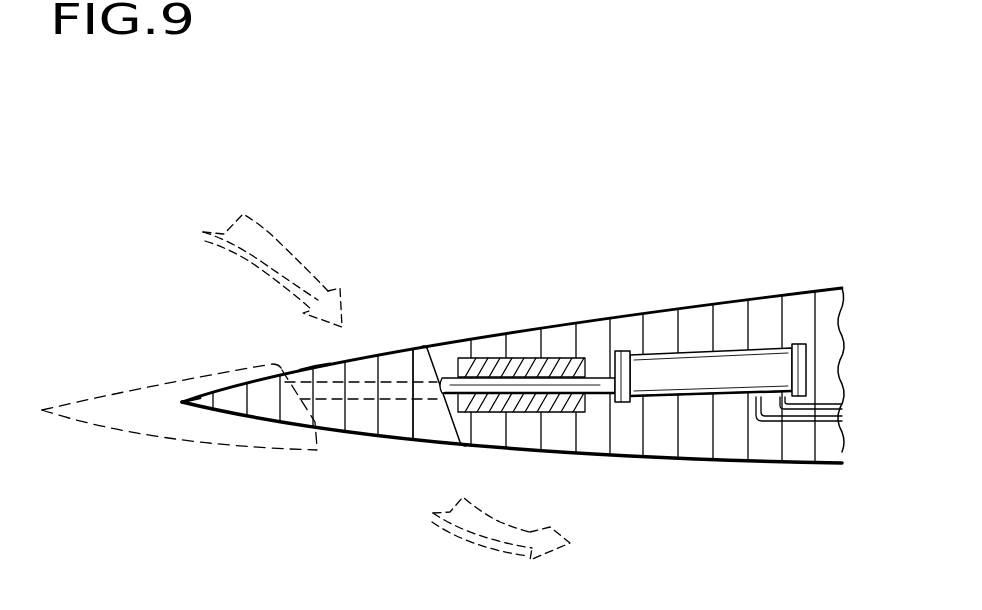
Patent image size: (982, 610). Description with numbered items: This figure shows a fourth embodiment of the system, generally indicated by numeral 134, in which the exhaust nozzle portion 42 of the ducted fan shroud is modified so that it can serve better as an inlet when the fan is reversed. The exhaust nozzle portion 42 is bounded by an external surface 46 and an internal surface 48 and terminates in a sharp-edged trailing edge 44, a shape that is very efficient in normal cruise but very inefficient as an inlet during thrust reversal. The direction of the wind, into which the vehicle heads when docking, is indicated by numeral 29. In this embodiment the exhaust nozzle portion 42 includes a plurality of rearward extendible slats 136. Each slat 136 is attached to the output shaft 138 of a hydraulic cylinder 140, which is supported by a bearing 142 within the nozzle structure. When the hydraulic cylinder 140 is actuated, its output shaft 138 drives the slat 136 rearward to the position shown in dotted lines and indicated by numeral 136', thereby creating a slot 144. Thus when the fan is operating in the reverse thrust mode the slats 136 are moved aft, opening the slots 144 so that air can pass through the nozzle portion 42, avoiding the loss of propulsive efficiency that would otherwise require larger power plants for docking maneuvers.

The wind direction 29 is at (287, 252).
The exhaust nozzle portion 42 is at (808, 287).
The trailing edge 44 is at (182, 400).
The external surface 46 is at (757, 298).
The internal surface 48 is at (670, 459).
The fourth embodiment of the system 134 is at (432, 240).
The rearward extendible slat 136 is at (375, 363).
The slat in rearward position 136' is at (179, 448).
The output shaft 138 is at (593, 370).
The hydraulic cylinder 140 is at (697, 346).
The bearing 142 is at (485, 358).
The slot 144 is at (305, 366).